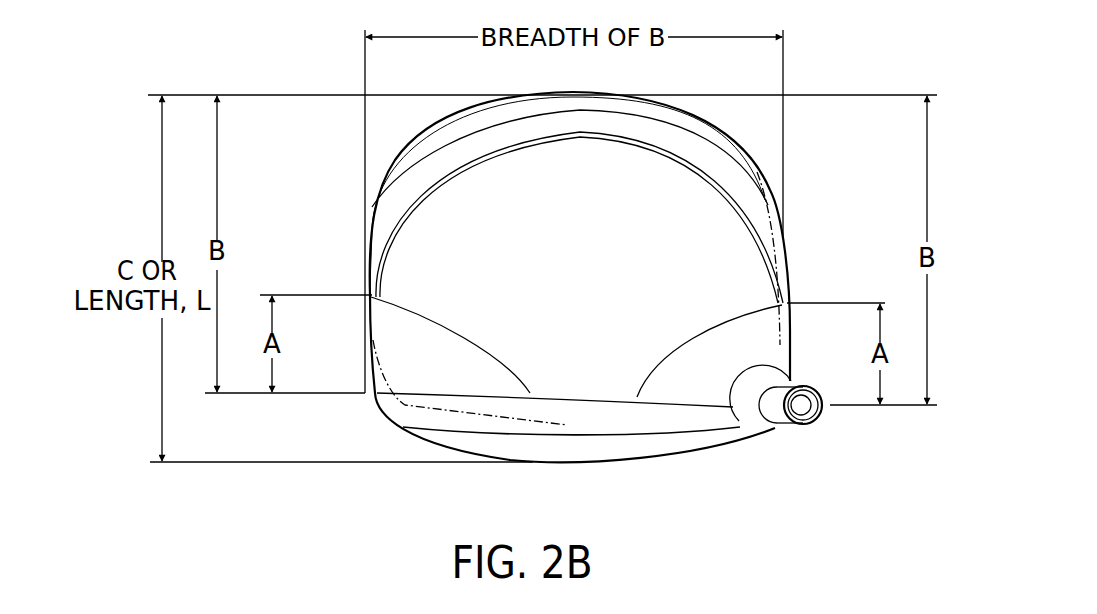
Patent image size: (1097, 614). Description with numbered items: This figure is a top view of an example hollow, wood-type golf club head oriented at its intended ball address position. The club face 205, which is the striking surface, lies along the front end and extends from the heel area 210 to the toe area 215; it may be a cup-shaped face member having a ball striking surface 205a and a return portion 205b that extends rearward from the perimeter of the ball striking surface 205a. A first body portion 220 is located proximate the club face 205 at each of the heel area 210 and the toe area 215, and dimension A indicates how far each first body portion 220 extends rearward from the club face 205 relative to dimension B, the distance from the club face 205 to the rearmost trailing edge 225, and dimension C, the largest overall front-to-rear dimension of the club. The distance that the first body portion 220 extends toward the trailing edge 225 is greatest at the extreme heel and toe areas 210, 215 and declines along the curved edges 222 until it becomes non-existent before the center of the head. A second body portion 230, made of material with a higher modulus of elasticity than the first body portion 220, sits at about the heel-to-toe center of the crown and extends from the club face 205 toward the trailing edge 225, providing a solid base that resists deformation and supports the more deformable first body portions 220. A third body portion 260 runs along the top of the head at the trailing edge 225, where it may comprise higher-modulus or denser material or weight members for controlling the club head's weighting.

The club face 205 is at (763, 452).
The ball striking surface 205a is at (542, 450).
The return portion 205b is at (607, 412).
The heel area 210 is at (803, 112).
The toe area 215 is at (360, 120).
The first body portion 220 is at (452, 375).
The curved edges 222 is at (428, 313).
The trailing edge 225 is at (733, 92).
The second body portion 230 is at (556, 284).
The third body portion 260 is at (723, 145).